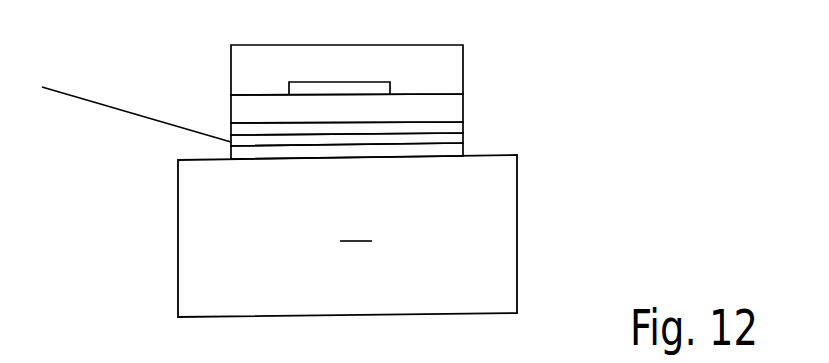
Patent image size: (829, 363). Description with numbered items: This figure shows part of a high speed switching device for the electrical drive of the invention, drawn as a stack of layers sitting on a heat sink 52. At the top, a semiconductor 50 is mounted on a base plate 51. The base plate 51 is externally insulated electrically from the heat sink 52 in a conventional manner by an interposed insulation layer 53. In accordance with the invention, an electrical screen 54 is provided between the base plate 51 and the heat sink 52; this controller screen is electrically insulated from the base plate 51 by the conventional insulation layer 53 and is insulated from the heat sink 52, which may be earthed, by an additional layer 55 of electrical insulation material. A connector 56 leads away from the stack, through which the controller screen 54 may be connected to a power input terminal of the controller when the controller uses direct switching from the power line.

The semiconductor 50 is at (377, 88).
The base plate 51 is at (455, 111).
The heat sink 52 is at (347, 236).
The insulation layer 53 is at (455, 128).
The electrical screen 54 is at (455, 138).
The additional layer 55 is at (467, 156).
The connector 56 is at (83, 100).